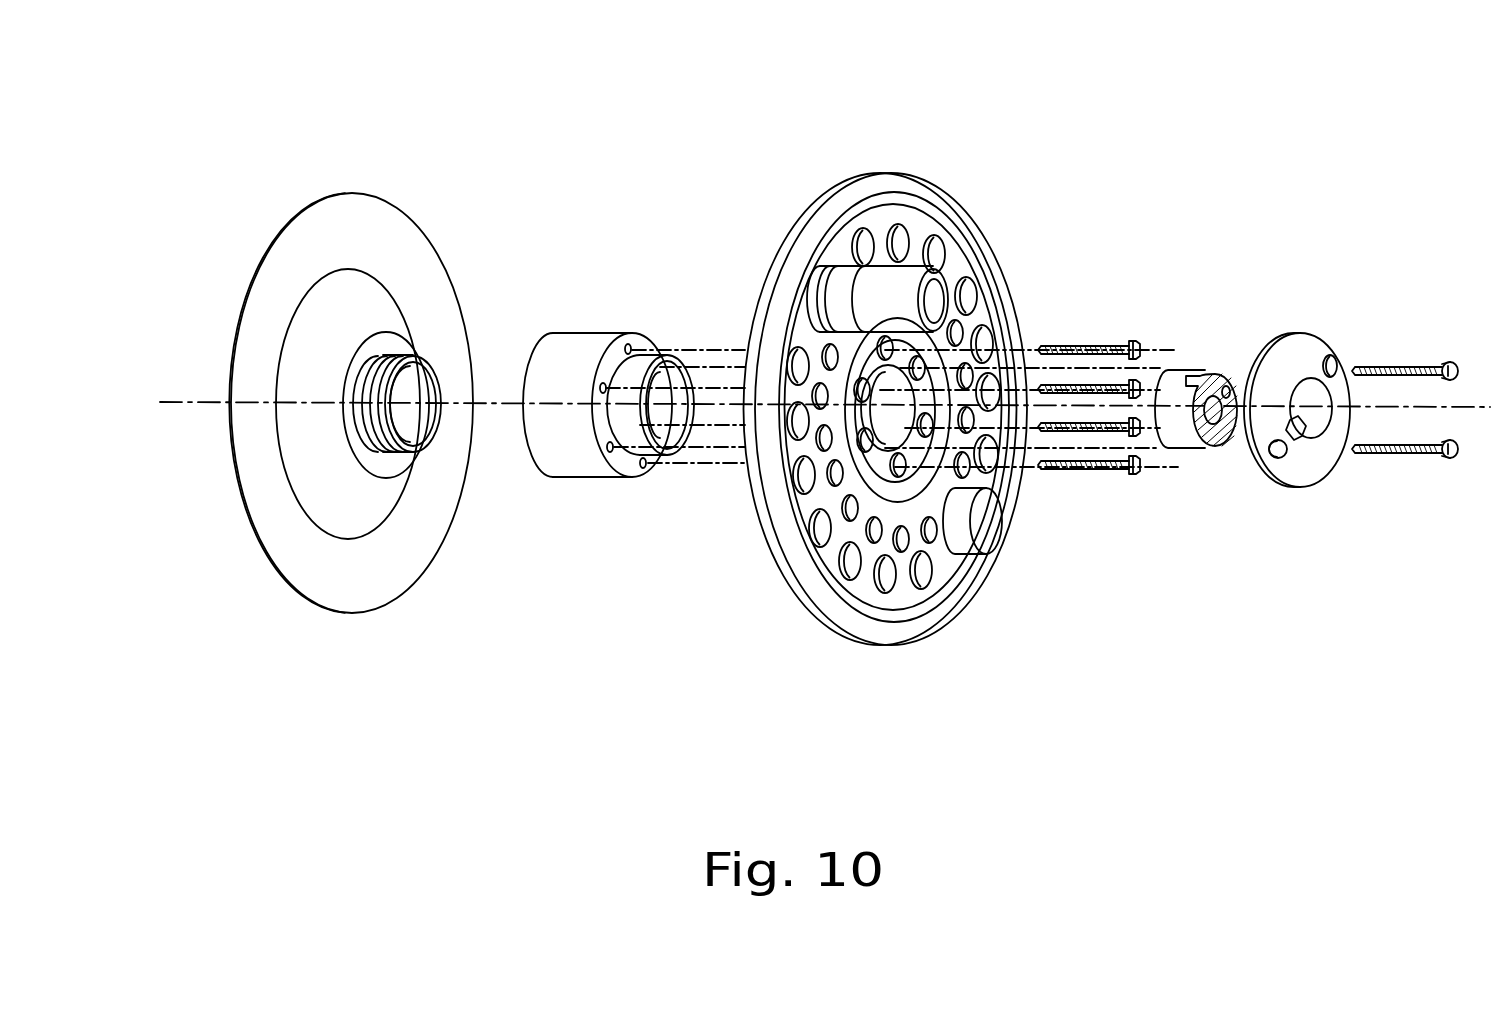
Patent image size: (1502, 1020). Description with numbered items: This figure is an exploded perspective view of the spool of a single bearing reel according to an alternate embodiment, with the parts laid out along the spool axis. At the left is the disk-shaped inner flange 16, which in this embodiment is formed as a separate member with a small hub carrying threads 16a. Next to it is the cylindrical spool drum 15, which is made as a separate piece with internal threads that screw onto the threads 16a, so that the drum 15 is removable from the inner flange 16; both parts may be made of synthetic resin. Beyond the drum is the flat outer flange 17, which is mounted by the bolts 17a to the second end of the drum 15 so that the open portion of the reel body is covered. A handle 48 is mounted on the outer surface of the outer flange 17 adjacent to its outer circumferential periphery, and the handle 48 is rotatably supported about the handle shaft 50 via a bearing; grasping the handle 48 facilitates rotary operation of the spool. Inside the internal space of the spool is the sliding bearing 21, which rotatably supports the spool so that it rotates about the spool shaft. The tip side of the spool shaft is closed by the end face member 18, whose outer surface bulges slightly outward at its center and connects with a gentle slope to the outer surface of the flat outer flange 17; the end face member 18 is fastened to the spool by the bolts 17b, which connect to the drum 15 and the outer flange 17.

The spool drum 15 is at (592, 348).
The inner flange 16 is at (398, 245).
The threads 16a is at (400, 358).
The outer flange 17 is at (822, 192).
The bolts 17a is at (1130, 352).
The bolts 17b is at (1404, 442).
The end face member 18 is at (1290, 335).
The sliding bearing 21 is at (1190, 450).
The handle 48 is at (887, 288).
The handle shaft 50 is at (936, 301).